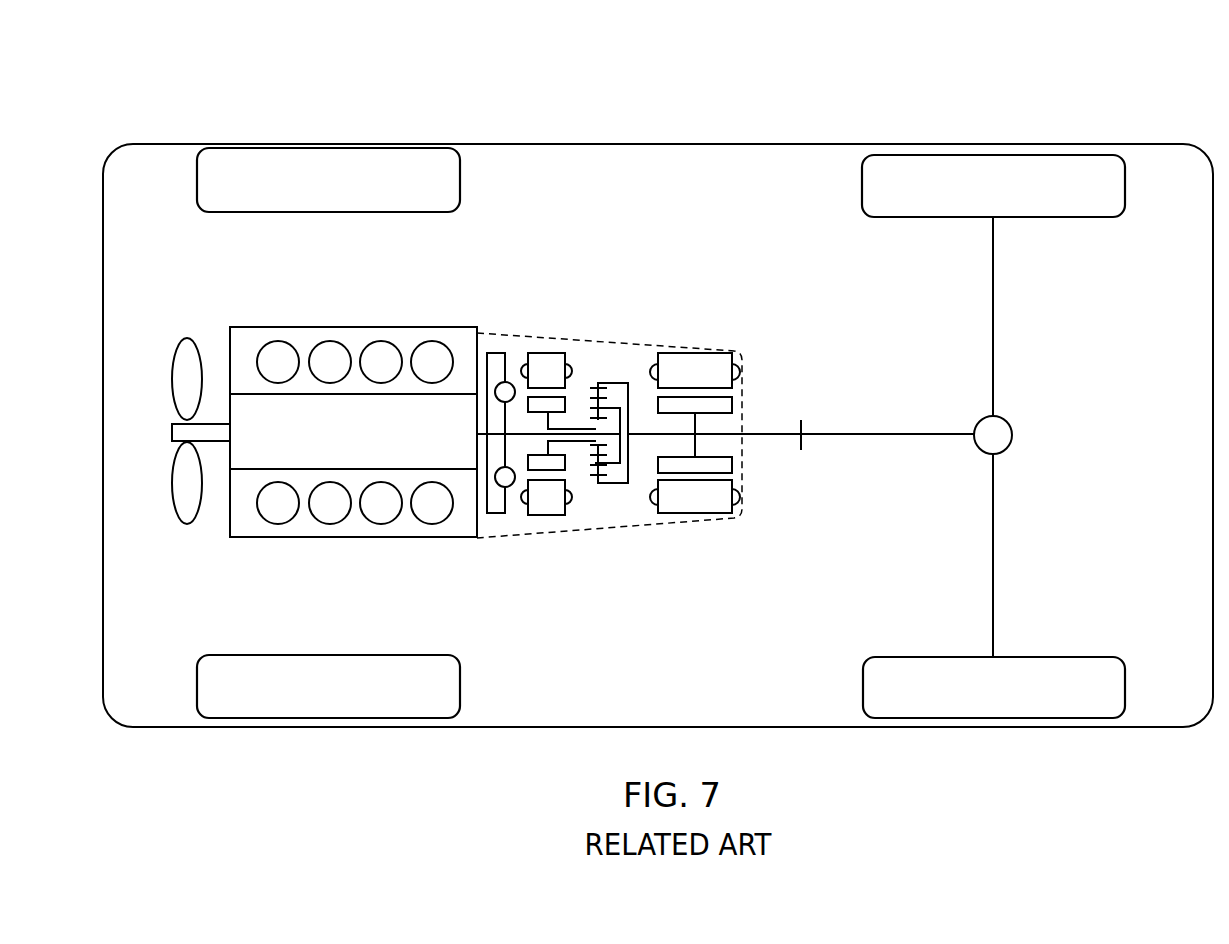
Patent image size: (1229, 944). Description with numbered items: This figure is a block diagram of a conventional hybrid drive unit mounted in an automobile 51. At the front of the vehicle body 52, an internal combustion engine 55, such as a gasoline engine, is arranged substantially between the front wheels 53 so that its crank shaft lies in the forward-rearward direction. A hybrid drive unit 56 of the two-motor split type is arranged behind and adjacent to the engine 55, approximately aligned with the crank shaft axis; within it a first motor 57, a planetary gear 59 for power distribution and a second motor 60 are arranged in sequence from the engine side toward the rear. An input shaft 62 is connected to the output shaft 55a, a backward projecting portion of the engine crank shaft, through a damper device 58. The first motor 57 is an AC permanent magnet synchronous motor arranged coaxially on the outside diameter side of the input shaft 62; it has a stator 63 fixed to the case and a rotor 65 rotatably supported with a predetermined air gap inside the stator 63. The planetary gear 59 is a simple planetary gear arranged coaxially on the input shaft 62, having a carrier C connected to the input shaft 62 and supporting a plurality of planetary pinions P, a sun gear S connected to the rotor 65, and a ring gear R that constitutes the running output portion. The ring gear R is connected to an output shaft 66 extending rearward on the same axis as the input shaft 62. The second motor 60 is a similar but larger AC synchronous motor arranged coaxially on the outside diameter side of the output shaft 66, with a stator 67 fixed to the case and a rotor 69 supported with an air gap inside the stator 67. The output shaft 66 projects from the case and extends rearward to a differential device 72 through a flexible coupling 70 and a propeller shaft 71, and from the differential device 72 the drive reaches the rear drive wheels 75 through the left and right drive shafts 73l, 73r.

The automobile 51 is at (658, 390).
The vehicle body 52 is at (656, 140).
The front wheels 53 is at (458, 178).
The internal combustion engine 55 is at (410, 327).
The output shaft 55a is at (484, 436).
The hybrid drive unit 56 is at (674, 292).
The first motor 57 is at (553, 350).
The damper device 58 is at (508, 380).
The planetary gear 59 is at (642, 449).
The second motor 60 is at (706, 352).
The input shaft 62 is at (525, 430).
The stator 63 is at (536, 512).
The rotor 65 is at (555, 465).
The output shaft 66 is at (634, 427).
The stator 67 is at (710, 508).
The rotor 69 is at (726, 466).
The flexible coupling 70 is at (803, 420).
The propeller shaft 71 is at (905, 434).
The differential device 72 is at (1018, 423).
The right drive shaft 73r is at (993, 270).
The left drive shaft 73l is at (993, 558).
The rear drive wheels 75 is at (1124, 183).
The sun gear S is at (613, 442).
The planetary pinions P is at (585, 466).
The carrier C is at (619, 459).
The ring gear R is at (630, 484).